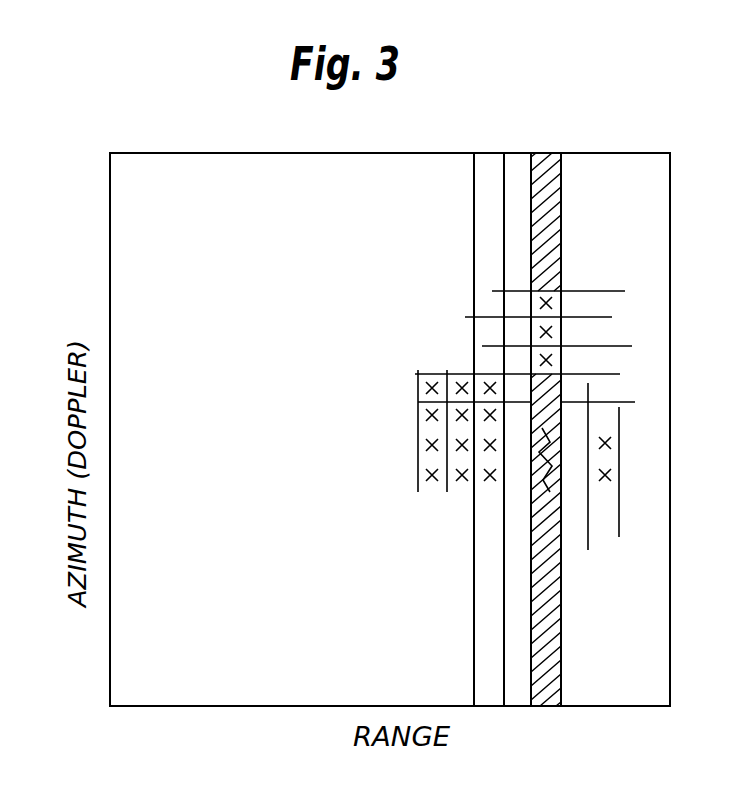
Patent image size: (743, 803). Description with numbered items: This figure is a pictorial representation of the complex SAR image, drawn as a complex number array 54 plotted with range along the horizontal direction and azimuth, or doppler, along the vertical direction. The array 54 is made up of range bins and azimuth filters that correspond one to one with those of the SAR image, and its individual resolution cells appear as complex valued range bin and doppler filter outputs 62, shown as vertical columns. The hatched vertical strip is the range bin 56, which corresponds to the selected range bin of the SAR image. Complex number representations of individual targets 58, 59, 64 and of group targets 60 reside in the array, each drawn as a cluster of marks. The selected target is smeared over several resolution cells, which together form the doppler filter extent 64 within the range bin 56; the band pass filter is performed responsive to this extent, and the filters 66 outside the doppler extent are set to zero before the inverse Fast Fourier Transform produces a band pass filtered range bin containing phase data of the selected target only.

The complex number array 54 is at (670, 706).
The range bin 56 is at (578, 98).
The individual target 58 is at (620, 450).
The individual target 59 is at (546, 466).
The group targets 60 is at (458, 487).
The complex valued range bin and doppler filter outputs 62 is at (480, 303).
The doppler filter extent 64 is at (560, 308).
The filters outside the doppler extent 66 is at (562, 210).